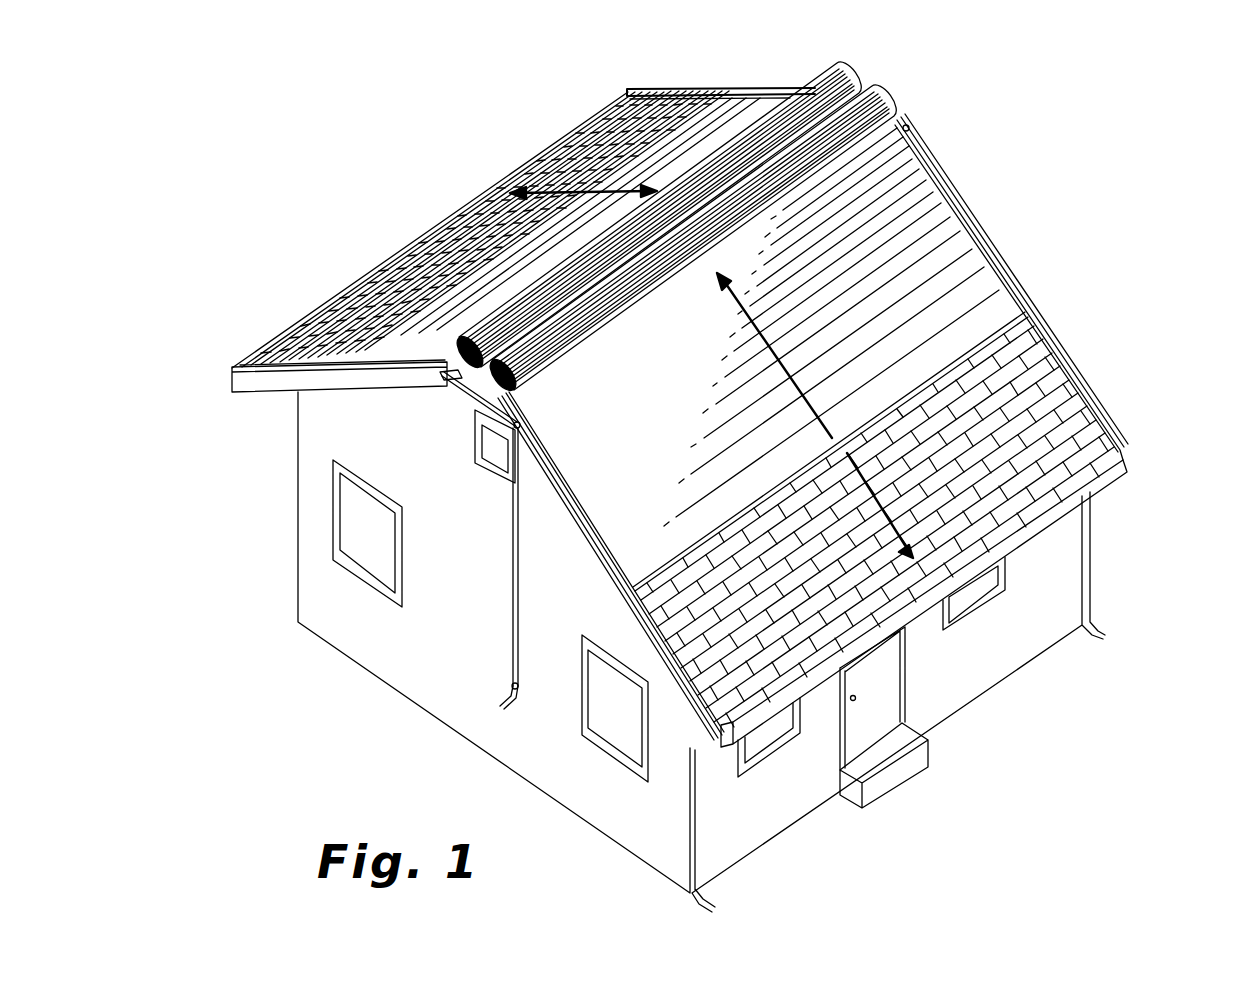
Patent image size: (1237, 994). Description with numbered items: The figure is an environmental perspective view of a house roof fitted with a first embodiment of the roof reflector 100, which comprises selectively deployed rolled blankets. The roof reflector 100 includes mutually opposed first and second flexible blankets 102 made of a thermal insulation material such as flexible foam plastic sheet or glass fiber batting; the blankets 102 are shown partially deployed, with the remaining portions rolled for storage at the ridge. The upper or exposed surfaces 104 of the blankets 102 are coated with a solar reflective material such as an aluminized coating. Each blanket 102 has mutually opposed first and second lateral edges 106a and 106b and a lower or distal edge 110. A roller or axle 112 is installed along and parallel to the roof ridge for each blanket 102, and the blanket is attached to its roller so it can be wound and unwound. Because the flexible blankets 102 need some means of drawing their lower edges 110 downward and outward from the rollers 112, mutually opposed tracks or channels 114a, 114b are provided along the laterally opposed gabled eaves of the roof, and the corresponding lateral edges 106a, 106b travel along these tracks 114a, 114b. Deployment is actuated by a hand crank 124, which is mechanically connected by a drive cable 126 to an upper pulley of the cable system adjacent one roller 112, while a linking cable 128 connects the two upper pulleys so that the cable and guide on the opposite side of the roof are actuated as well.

The roof reflector 100 is at (1131, 133).
The flexible blanket 102 is at (878, 106).
The upper or exposed surface 104 is at (953, 288).
The first lateral edge 106a is at (740, 100).
The second lateral edge 106b is at (375, 357).
The lower or distal edge 110 is at (1047, 333).
The roller or axle 112 is at (467, 392).
The track or channel 114a is at (628, 90).
The track or channel 114b is at (252, 364).
The hand crank 124 is at (515, 684).
The drive cable 126 is at (513, 522).
The linking cable 128 is at (455, 383).